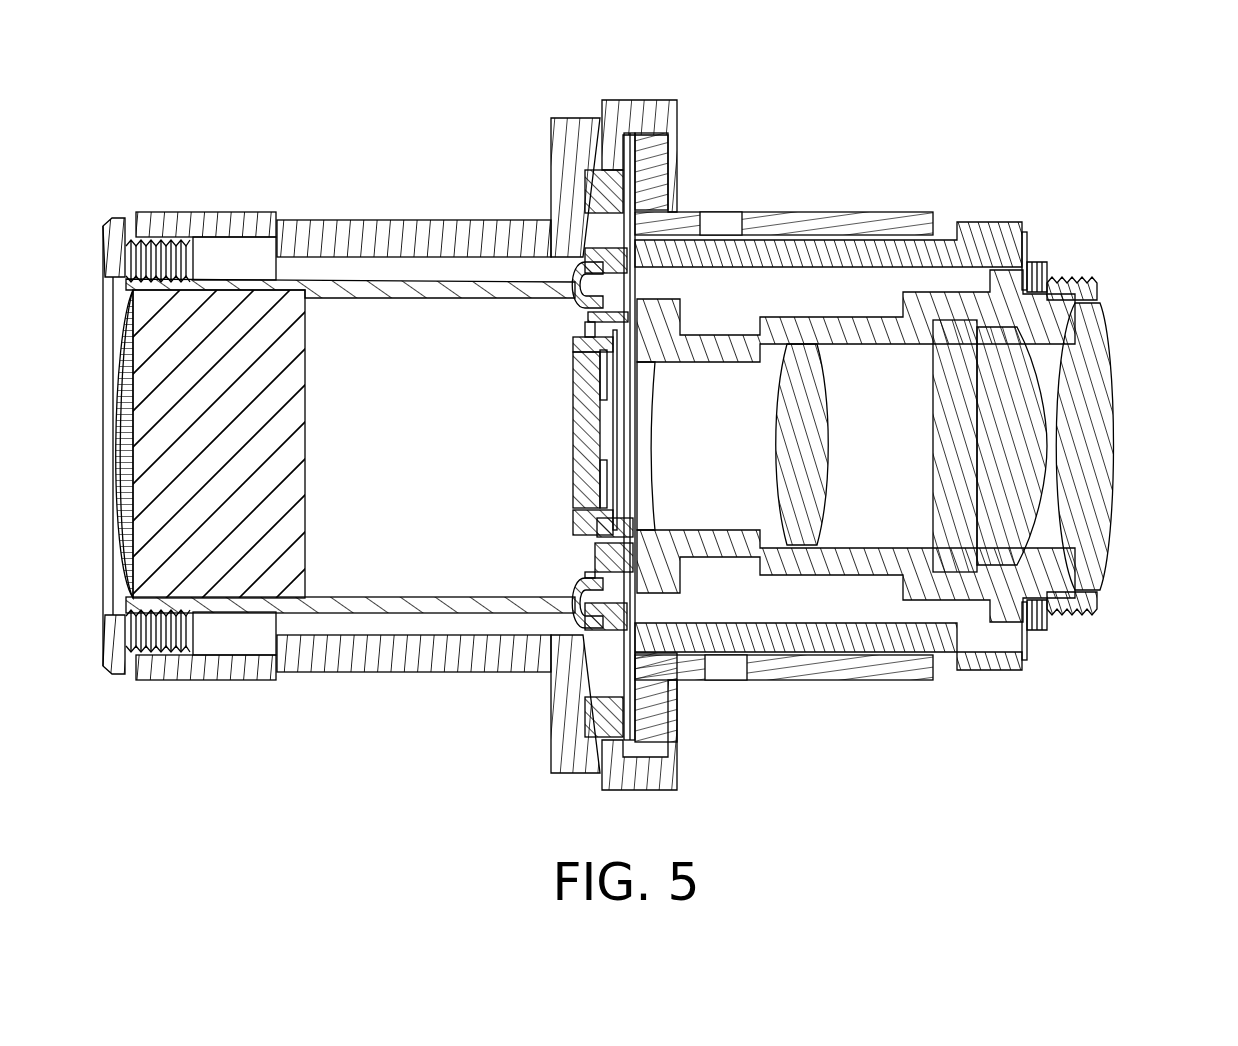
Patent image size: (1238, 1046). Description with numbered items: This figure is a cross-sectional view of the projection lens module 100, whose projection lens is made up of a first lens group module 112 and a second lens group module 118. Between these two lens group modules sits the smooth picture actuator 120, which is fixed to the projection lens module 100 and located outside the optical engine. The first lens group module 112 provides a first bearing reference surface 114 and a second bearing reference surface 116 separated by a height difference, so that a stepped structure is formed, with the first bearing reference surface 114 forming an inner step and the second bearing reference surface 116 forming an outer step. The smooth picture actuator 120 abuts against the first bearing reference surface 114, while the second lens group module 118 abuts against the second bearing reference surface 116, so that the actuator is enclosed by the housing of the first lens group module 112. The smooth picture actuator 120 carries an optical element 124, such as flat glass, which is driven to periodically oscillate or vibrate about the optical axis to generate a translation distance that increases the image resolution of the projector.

The projection lens module 100 is at (1083, 124).
The first lens group module 112 is at (401, 221).
The first bearing reference surface 114 is at (600, 168).
The second bearing reference surface 116 is at (645, 148).
The second lens group module 118 is at (825, 211).
The smooth picture actuator 120 is at (590, 186).
The optical element 124 is at (583, 477).